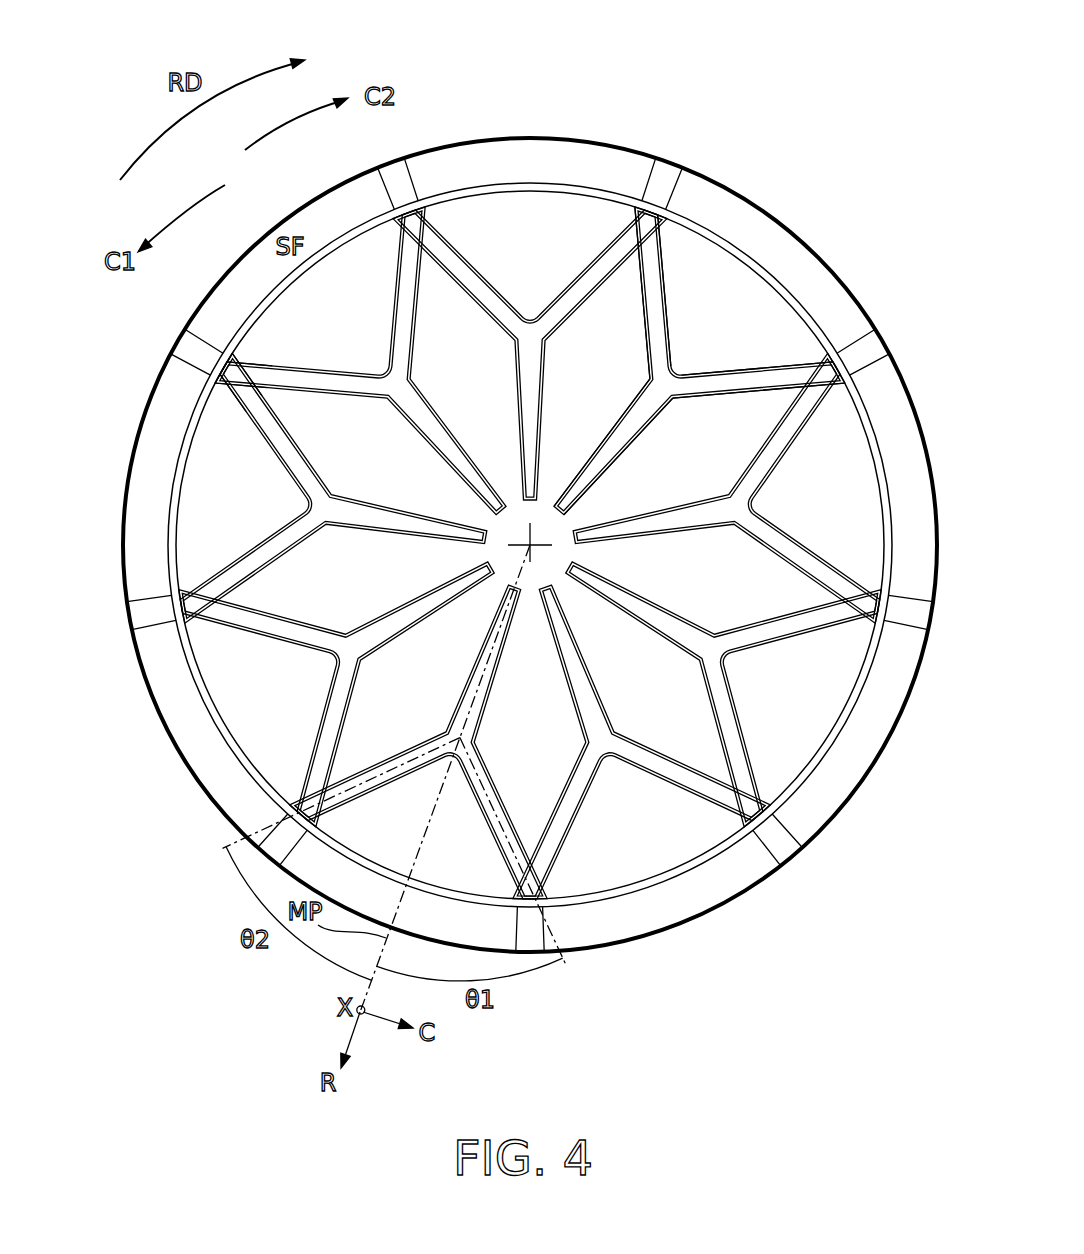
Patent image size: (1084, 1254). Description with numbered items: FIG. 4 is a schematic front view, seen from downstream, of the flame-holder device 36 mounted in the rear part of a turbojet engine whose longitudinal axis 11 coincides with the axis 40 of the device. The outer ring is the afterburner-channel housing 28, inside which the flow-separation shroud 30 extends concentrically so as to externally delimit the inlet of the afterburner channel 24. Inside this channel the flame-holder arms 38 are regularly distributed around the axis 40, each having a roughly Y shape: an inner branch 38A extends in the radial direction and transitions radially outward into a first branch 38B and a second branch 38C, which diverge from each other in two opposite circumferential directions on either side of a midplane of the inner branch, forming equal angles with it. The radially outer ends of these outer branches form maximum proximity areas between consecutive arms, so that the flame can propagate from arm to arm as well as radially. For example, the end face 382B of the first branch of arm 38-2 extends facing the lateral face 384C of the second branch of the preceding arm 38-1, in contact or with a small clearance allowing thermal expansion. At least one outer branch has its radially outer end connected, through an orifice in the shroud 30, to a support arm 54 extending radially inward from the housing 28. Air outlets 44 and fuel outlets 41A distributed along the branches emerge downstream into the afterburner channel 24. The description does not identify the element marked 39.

The longitudinal axis 11 is at (527, 548).
The afterburner channel 24 is at (530, 545).
The housing 28 is at (594, 142).
The flow-separation shroud 30 is at (455, 190).
The flame-holder device 36 is at (788, 878).
The flame-holder arms 38 is at (472, 521).
The flame-holder arm 38-1 is at (282, 465).
The flame-holder arm 38-2 is at (363, 365).
The inner branch 38A is at (620, 412).
The first branch 38B is at (667, 267).
The second branch 38C is at (784, 323).
The end face 382B is at (220, 378).
The lateral face 384C is at (242, 352).
The fillet corner of slot 39 is at (758, 635).
The axis of the device 40 is at (296, 627).
The fuel outlets 41A is at (602, 707).
The air outlets 44 is at (595, 769).
The support arm 54 is at (868, 368).